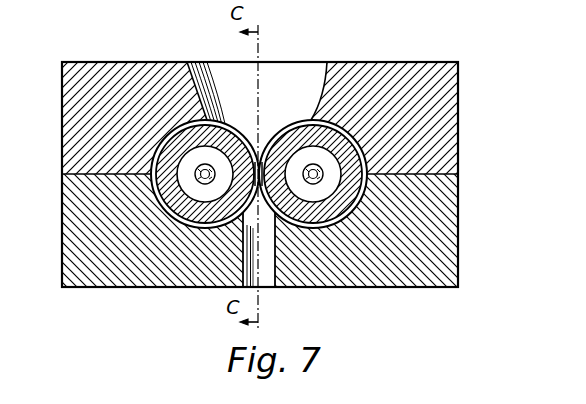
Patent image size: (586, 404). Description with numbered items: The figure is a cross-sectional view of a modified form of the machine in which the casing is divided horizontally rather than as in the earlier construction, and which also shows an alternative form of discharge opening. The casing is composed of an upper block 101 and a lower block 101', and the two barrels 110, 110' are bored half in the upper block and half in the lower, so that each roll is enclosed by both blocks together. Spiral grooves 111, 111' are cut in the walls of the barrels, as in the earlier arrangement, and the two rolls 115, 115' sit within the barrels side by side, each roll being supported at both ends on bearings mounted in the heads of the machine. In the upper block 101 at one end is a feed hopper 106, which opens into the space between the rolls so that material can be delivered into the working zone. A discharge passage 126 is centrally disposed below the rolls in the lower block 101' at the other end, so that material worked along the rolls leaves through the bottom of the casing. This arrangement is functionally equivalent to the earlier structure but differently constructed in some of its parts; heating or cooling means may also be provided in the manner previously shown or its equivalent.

The upper block 101 is at (285, 118).
The lower block 101' is at (283, 230).
The feed hopper 106 is at (257, 118).
The barrel 110 is at (384, 174).
The barrel 110' is at (134, 178).
The spiral groove 111 is at (340, 132).
The spiral groove 111' is at (179, 130).
The roll 115 is at (341, 224).
The roll 115' is at (200, 222).
The discharge passage 126 is at (265, 278).